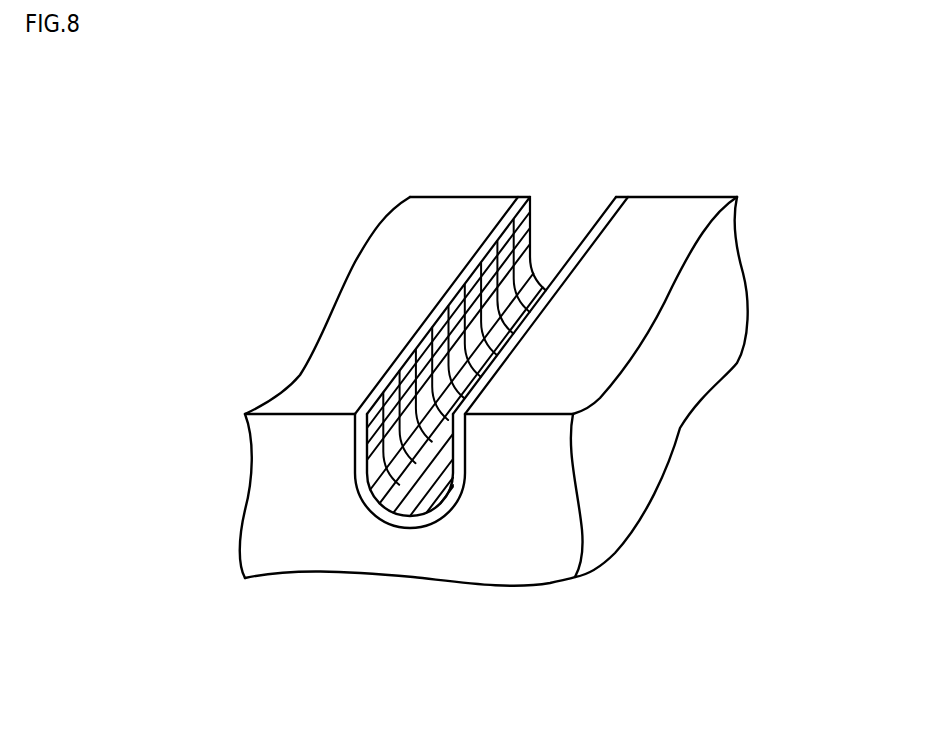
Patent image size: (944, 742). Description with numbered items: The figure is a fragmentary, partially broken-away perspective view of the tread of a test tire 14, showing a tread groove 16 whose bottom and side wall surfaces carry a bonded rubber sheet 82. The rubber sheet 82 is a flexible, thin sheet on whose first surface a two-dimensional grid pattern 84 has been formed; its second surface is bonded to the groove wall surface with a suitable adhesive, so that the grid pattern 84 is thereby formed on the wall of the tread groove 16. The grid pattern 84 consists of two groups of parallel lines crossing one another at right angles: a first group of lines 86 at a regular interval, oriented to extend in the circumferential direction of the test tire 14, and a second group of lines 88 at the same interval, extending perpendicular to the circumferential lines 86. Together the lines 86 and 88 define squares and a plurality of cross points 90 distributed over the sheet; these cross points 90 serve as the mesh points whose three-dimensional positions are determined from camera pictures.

The test tire 14 is at (705, 173).
The tread groove 16 is at (575, 236).
The rubber sheet 82 is at (598, 228).
The two-dimensional grid pattern 84 is at (542, 197).
The first group of lines 86 is at (383, 503).
The second group of lines 88 is at (420, 338).
The cross points 90 is at (420, 483).